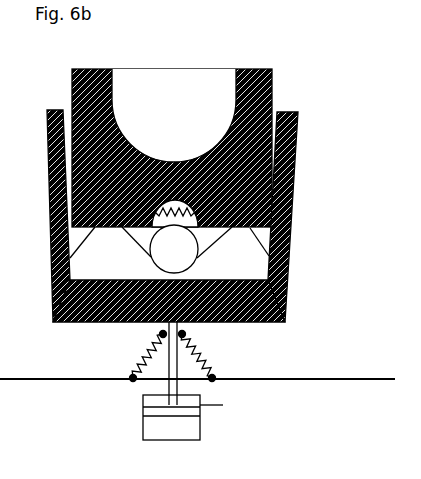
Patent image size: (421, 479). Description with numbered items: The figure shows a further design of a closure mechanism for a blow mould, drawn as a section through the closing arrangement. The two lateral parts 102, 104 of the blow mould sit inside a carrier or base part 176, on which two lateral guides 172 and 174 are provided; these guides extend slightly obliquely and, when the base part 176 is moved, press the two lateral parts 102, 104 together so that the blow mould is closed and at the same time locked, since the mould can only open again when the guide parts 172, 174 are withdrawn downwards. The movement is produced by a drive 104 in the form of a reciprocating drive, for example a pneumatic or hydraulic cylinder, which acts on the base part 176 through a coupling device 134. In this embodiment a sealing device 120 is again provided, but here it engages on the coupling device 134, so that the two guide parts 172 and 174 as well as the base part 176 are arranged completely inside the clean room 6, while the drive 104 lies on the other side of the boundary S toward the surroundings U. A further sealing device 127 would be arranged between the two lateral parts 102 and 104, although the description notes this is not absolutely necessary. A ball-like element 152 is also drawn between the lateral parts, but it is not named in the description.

The lateral part 102 is at (265, 150).
The further sealing device 127 is at (203, 158).
The ball 152 is at (178, 263).
The lateral guide 174 is at (52, 253).
The base part 176 is at (283, 312).
The lateral guide 172 is at (287, 208).
The drive 104 is at (188, 428).
The coupling device 134 is at (170, 368).
The sealing device 120 is at (203, 357).
The surface S is at (337, 378).
The clean room 6 is at (368, 246).
The surroundings U is at (28, 431).